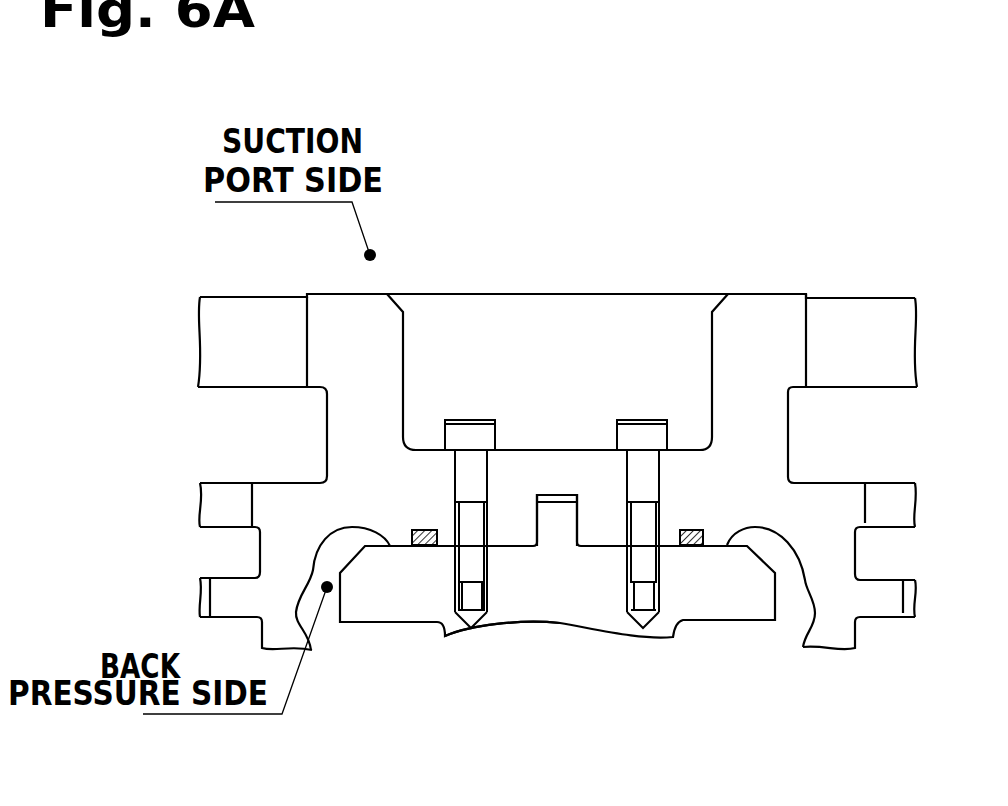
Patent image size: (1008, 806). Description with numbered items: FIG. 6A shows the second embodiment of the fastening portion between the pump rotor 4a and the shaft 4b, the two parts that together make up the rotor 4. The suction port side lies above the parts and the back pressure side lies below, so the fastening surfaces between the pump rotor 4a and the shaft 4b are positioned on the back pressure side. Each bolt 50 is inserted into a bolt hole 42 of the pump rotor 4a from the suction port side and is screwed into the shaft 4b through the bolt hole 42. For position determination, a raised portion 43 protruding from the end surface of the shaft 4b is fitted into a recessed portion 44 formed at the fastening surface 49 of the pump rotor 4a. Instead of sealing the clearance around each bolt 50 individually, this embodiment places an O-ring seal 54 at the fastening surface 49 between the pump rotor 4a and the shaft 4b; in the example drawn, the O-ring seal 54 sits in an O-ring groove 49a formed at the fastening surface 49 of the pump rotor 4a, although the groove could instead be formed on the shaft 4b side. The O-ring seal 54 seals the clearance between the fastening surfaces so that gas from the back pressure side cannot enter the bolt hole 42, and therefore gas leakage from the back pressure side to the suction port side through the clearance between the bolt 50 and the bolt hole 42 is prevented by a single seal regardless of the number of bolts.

The rotor 4 is at (445, 272).
The pump rotor 4a is at (765, 320).
The shaft 4b is at (747, 587).
The bolt hole 42 is at (462, 503).
The raised portion 43 is at (565, 532).
The recessed portion 44 is at (547, 517).
The fastening surface 49 is at (402, 546).
The O-ring groove 49a is at (410, 533).
The bolt 50 is at (637, 435).
The O-ring seal 54 is at (693, 547).